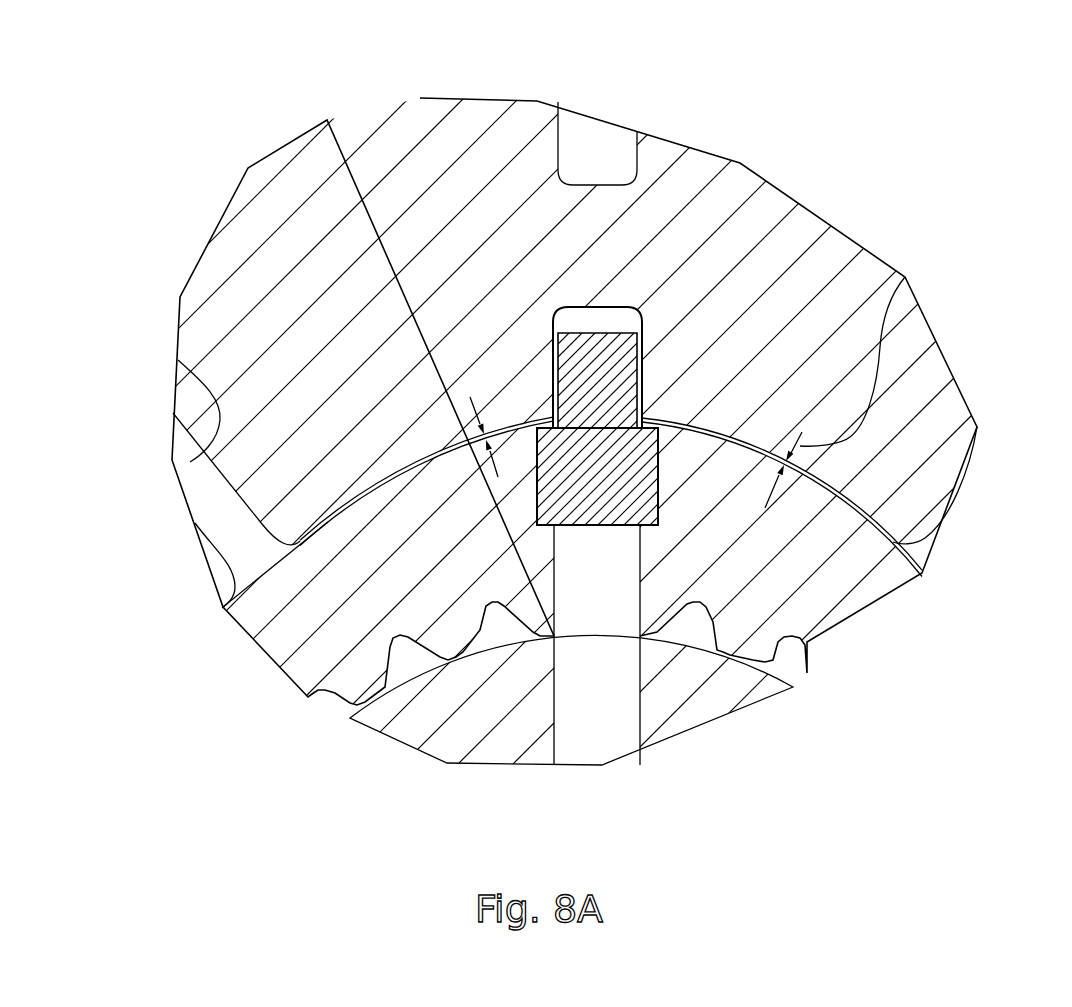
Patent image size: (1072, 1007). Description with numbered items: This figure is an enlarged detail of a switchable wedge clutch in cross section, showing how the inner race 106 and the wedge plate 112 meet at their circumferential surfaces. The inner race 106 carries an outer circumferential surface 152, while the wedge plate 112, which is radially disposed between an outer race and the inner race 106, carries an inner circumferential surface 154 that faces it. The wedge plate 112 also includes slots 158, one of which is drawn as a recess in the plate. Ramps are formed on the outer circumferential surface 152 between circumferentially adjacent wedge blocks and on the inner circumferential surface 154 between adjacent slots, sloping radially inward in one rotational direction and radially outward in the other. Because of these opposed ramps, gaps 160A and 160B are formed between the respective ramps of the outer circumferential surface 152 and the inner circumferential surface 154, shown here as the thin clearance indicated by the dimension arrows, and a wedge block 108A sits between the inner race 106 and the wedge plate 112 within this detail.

The inner race 106 is at (262, 655).
The fastener 108A is at (598, 333).
The wedge plate 112 is at (492, 96).
The outer circumferential surface 152 is at (888, 534).
The inner circumferential surface 154 is at (397, 463).
The slots 158 is at (178, 360).
The gap 160A is at (905, 277).
The gap 160B is at (480, 407).